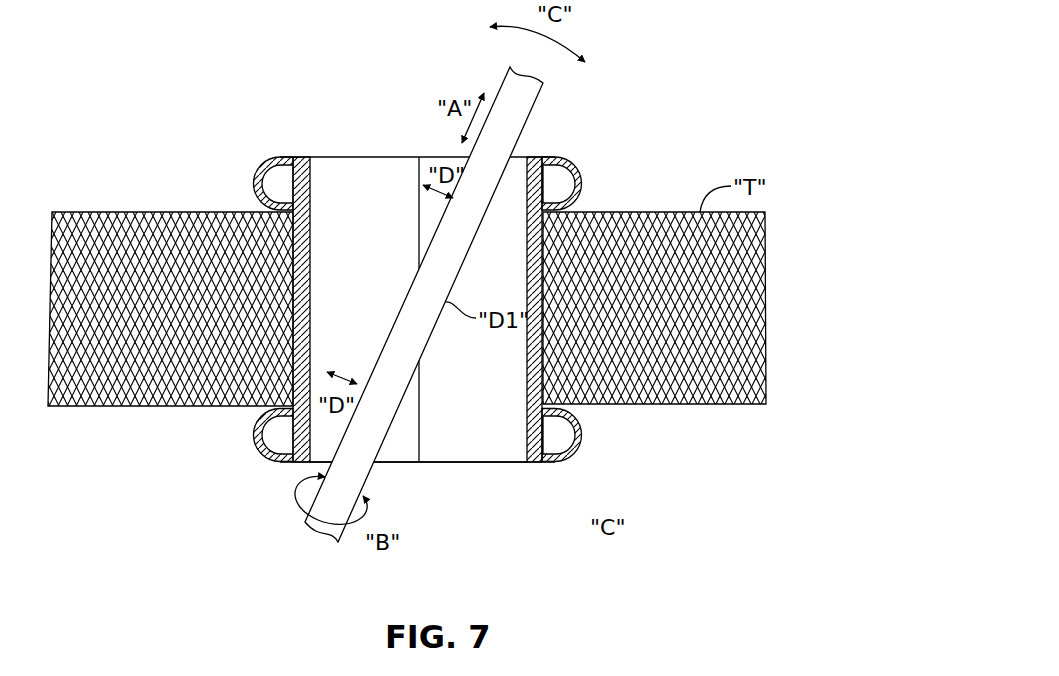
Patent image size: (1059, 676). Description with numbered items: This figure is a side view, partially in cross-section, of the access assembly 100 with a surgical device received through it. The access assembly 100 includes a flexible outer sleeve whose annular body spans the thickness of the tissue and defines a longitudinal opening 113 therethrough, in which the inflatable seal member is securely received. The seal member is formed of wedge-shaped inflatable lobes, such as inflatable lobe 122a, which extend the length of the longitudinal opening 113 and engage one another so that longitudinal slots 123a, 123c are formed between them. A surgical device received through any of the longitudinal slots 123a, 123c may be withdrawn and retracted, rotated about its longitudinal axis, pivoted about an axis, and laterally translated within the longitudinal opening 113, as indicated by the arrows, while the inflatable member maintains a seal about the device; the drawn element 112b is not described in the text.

The access assembly 100 is at (648, 36).
The second anchor member 112b is at (343, 157).
The longitudinal opening 113 is at (308, 292).
The inflatable lobe 122a is at (483, 462).
The longitudinal slot 123a is at (381, 309).
The longitudinal slot 123c is at (473, 309).